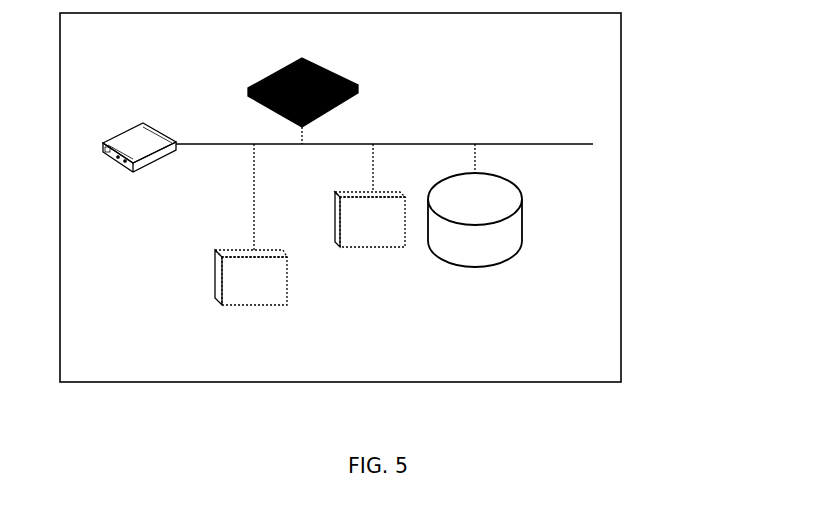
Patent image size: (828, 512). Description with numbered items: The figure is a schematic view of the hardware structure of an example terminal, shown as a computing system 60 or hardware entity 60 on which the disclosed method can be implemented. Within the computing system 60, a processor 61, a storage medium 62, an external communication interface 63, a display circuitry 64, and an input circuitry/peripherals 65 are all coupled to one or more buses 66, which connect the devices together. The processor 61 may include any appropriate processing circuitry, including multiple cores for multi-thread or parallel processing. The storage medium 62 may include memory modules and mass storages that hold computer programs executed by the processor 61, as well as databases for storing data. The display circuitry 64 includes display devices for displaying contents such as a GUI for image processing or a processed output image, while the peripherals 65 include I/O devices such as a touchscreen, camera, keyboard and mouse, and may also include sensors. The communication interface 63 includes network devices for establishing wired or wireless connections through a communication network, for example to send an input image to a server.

The computing system 60 is at (621, 110).
The processor 61 is at (350, 78).
The storage medium 62 is at (523, 227).
The external communication interface 63 is at (160, 128).
The display circuitry 64 is at (267, 312).
The input circuitry/peripherals 65 is at (353, 252).
The bus 66 is at (515, 143).